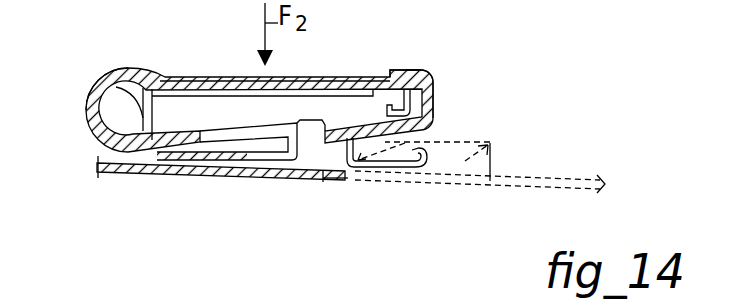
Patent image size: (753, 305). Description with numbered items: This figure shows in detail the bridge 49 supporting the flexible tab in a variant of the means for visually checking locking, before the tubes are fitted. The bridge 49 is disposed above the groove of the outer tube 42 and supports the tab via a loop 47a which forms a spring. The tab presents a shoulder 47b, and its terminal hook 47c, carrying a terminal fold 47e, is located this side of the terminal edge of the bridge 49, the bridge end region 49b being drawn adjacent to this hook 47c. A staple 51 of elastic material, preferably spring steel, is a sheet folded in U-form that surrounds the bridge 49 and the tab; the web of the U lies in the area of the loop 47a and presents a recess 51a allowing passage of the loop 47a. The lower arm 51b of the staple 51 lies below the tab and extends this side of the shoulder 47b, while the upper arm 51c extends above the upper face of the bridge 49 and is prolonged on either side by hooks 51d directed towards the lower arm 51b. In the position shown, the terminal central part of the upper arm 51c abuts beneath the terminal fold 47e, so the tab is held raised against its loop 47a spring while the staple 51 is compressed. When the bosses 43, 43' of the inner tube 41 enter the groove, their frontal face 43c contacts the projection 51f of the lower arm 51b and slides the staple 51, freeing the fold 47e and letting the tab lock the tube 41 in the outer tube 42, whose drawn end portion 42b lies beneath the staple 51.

The tube 41 is at (563, 183).
The outer tube 42 is at (128, 174).
The hooked end of mounting plate 42b is at (430, 165).
The boss 43 is at (480, 148).
The boss 43' is at (476, 153).
The frontal face of boss 43c is at (333, 182).
The loop 47a is at (97, 97).
The shoulder 47b is at (313, 127).
The terminal hook 47c is at (433, 96).
The terminal fold 47e is at (405, 69).
The bridge 49 is at (200, 74).
The cover plate end 49b is at (357, 77).
The staple 51 is at (165, 70).
The recess 51a is at (103, 80).
The lower arm 51b is at (207, 175).
The upper arm 51c is at (325, 75).
The hook 51d is at (410, 113).
The longitudinal projection 51f is at (237, 173).